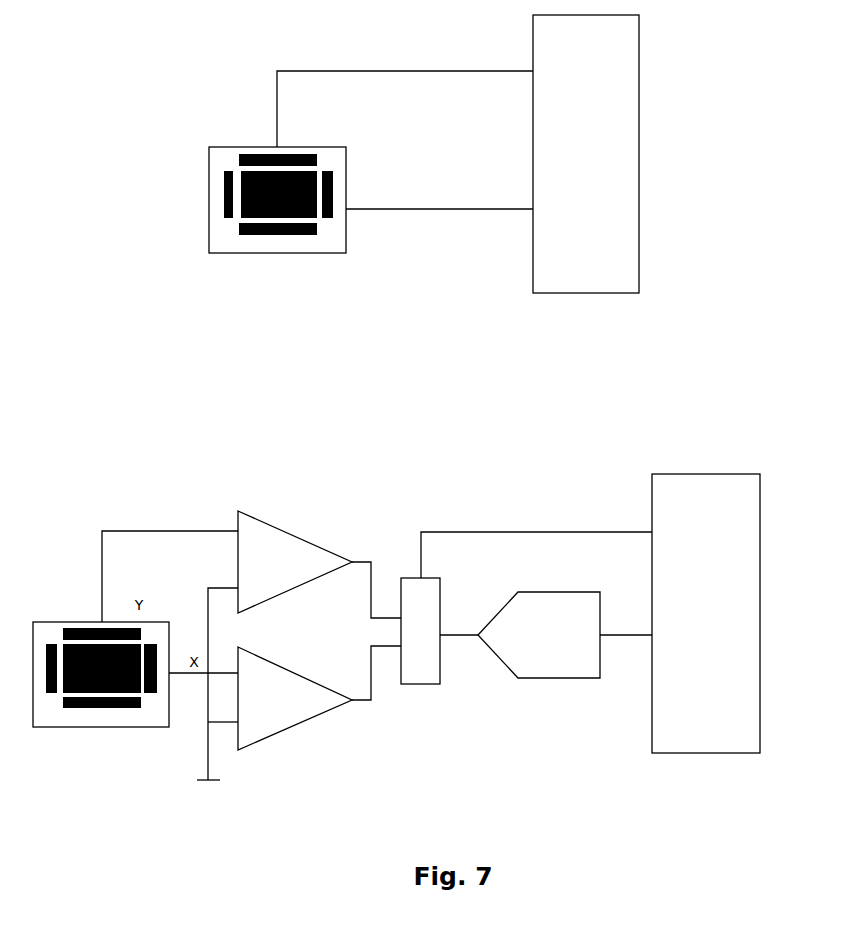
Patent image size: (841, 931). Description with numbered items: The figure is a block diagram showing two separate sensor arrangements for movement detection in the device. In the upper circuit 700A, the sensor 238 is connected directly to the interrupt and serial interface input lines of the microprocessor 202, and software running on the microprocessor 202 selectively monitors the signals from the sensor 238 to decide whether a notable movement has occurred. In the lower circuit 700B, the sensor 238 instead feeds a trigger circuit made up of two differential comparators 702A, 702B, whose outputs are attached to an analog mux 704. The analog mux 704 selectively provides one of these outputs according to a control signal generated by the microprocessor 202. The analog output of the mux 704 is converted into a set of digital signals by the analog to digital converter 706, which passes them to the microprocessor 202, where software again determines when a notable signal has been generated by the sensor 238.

The sensor 238 is at (189, 451).
The microprocessor 202 is at (722, 473).
The circuit 700A is at (771, 225).
The circuit 700B is at (815, 755).
The differential comparator 702A is at (319, 703).
The differential comparator 702B is at (319, 560).
The analog mux 704 is at (526, 622).
The analog to digital converter 706 is at (545, 675).